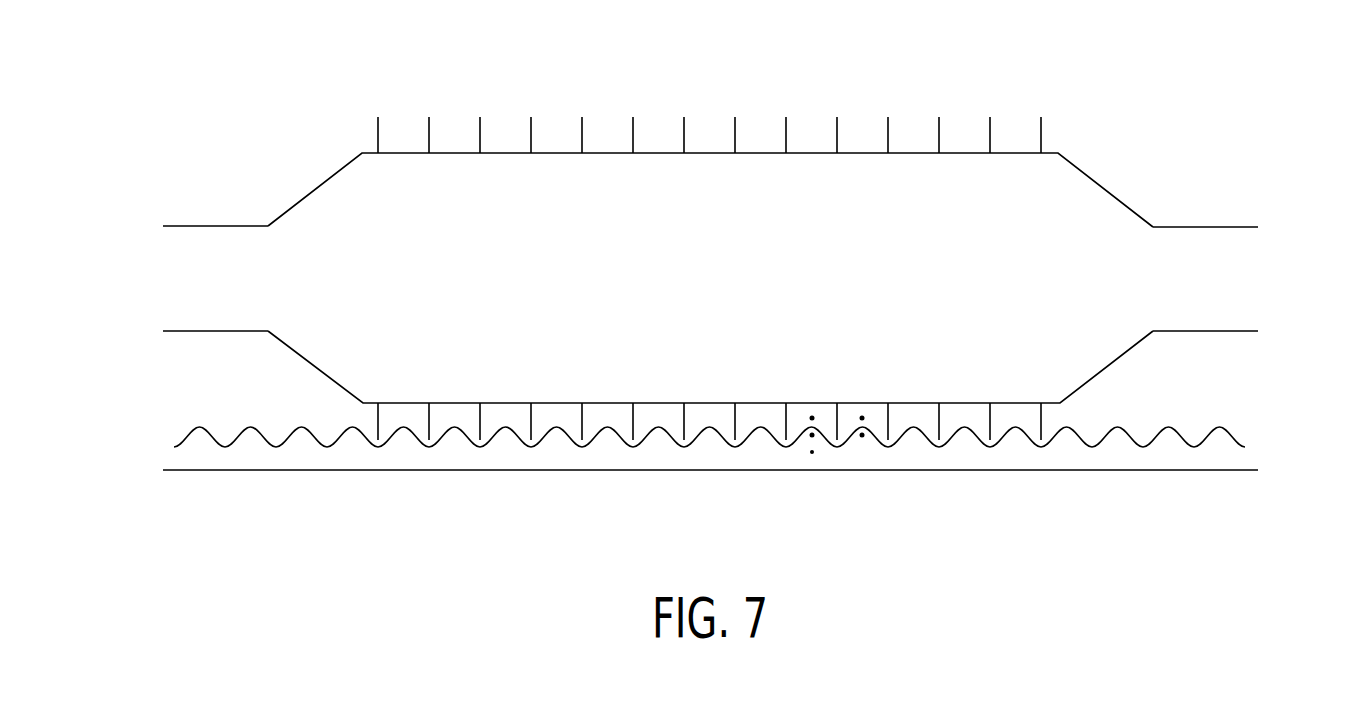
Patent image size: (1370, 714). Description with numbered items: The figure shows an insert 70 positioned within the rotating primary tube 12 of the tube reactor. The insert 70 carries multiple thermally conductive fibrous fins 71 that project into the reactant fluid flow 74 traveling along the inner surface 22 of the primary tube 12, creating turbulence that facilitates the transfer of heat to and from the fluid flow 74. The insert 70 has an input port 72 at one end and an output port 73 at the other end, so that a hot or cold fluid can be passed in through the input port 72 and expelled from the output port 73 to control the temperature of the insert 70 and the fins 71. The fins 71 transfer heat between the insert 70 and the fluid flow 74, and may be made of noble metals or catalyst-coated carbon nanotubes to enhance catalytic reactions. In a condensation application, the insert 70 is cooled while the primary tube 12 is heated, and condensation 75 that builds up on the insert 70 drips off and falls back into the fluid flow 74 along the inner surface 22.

The insert 70 is at (727, 289).
The thermally conductive fibrous fins 71 is at (937, 127).
The input port 72 is at (1255, 274).
The output port 73 is at (165, 275).
The fluid flow 74 is at (607, 447).
The condensation 75 is at (812, 452).
The primary tube 12 is at (400, 472).
The inner surface 22 is at (1076, 474).